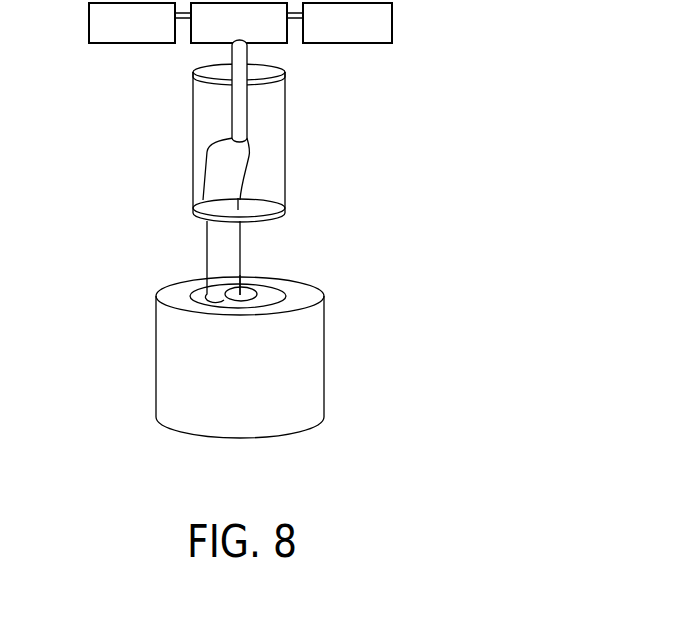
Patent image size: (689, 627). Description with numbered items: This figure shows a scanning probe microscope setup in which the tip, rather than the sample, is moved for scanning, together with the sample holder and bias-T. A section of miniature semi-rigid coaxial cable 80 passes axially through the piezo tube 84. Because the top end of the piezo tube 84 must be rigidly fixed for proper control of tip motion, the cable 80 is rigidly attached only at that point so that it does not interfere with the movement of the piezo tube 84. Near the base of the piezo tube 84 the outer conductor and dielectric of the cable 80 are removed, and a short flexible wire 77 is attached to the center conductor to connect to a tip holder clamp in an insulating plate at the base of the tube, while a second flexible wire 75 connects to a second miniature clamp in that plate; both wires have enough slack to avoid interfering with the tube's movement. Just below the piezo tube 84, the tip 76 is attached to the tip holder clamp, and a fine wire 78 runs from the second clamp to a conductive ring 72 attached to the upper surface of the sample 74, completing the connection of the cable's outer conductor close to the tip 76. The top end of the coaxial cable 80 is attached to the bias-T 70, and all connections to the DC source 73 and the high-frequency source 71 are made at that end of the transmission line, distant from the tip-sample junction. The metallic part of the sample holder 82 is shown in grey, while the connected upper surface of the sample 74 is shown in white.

The bias-T 70 is at (239, 23).
The high-frequency source 71 is at (132, 23).
The DC source 73 is at (347, 23).
The ring 72 is at (262, 286).
The sample 74 is at (208, 302).
The second flexible wire 75 is at (205, 175).
The tip 76 is at (245, 288).
The flexible wire 77 is at (242, 188).
The fine wire 78 is at (207, 237).
The semi-rigid coaxial cable 80 is at (242, 108).
The block 82 is at (183, 399).
The piezo tube 84 is at (206, 143).